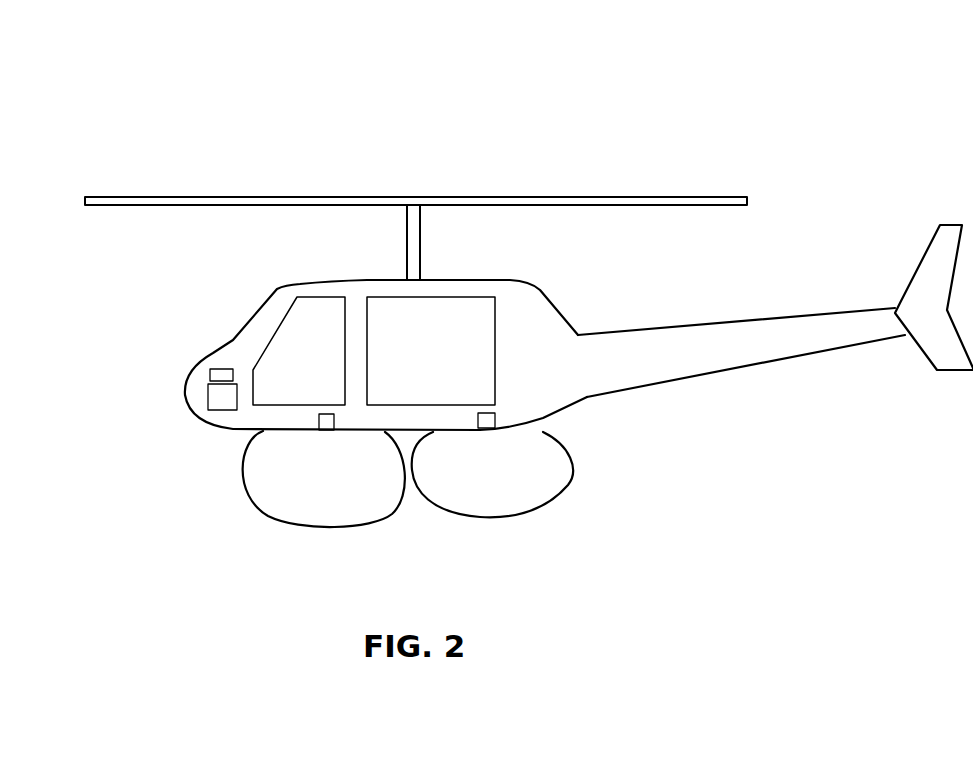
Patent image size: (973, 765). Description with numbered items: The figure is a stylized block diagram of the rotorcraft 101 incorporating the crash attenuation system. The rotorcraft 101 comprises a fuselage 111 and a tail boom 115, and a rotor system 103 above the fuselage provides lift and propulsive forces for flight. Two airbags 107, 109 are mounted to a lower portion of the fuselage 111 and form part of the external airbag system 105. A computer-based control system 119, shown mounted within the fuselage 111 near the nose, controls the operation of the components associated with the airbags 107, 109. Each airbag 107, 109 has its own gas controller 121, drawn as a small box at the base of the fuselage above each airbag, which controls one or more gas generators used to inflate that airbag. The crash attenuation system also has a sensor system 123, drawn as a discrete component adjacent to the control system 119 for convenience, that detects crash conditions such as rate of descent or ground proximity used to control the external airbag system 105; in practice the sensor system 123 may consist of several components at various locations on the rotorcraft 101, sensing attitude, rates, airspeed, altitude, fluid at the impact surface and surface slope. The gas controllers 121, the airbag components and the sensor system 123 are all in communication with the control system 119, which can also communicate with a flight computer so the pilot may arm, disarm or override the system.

The rotorcraft 101 is at (236, 111).
The rotor system 103 is at (145, 197).
The external airbag system 105 is at (204, 520).
The airbag 107 is at (318, 525).
The airbag 109 is at (517, 517).
The fuselage 111 is at (547, 295).
The tail boom 115 is at (760, 365).
The computer-based control system 119 is at (208, 398).
The gas controller 121 is at (318, 422).
The sensor system 123 is at (210, 372).